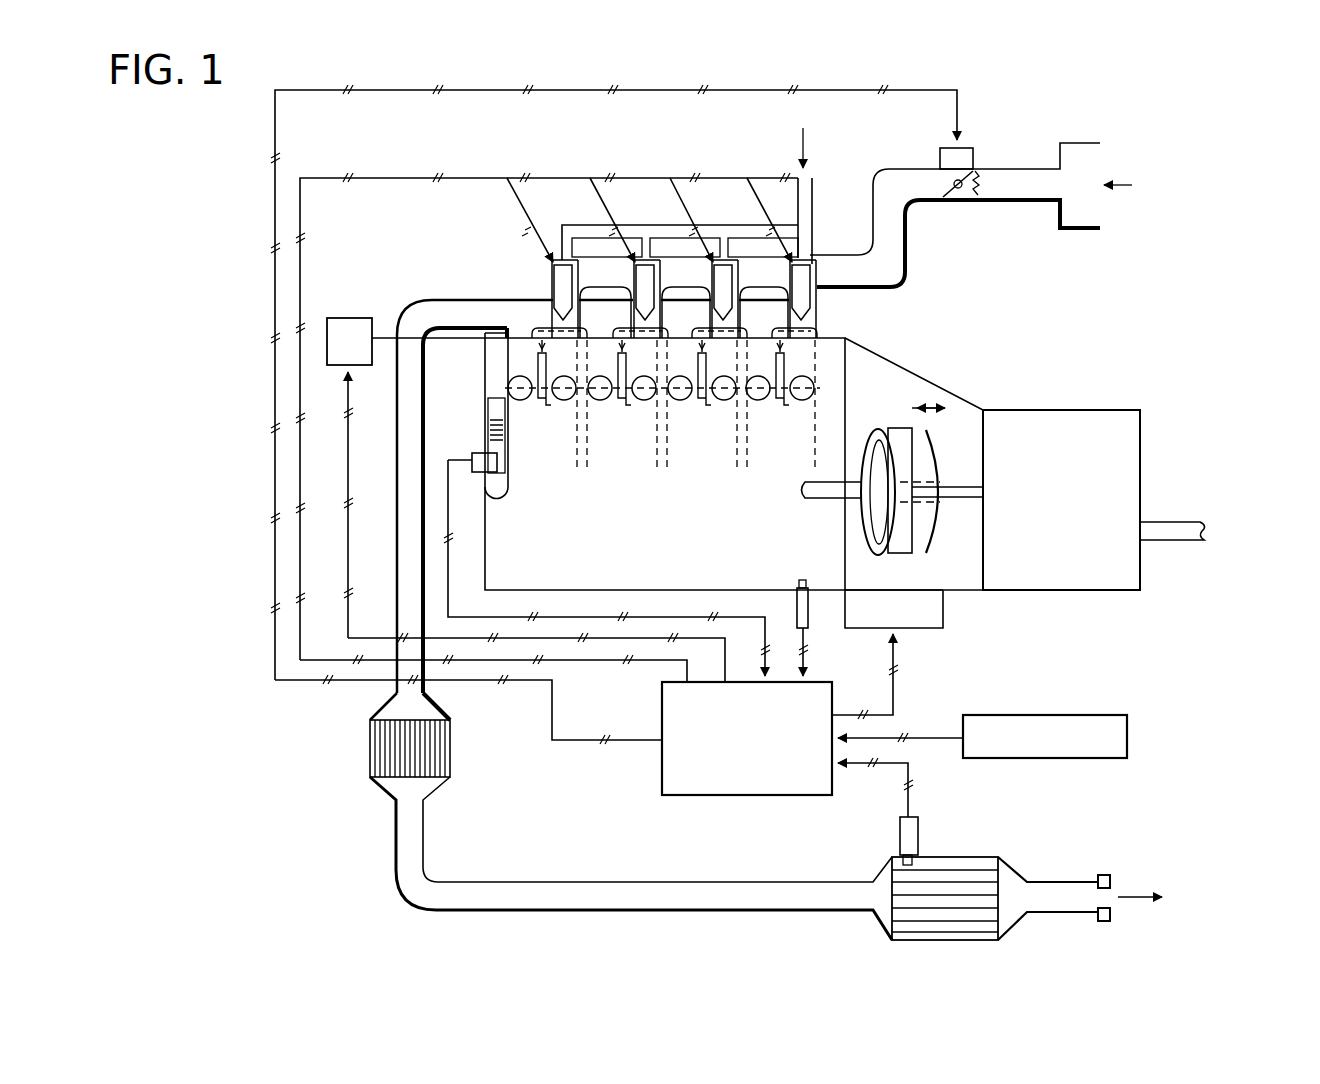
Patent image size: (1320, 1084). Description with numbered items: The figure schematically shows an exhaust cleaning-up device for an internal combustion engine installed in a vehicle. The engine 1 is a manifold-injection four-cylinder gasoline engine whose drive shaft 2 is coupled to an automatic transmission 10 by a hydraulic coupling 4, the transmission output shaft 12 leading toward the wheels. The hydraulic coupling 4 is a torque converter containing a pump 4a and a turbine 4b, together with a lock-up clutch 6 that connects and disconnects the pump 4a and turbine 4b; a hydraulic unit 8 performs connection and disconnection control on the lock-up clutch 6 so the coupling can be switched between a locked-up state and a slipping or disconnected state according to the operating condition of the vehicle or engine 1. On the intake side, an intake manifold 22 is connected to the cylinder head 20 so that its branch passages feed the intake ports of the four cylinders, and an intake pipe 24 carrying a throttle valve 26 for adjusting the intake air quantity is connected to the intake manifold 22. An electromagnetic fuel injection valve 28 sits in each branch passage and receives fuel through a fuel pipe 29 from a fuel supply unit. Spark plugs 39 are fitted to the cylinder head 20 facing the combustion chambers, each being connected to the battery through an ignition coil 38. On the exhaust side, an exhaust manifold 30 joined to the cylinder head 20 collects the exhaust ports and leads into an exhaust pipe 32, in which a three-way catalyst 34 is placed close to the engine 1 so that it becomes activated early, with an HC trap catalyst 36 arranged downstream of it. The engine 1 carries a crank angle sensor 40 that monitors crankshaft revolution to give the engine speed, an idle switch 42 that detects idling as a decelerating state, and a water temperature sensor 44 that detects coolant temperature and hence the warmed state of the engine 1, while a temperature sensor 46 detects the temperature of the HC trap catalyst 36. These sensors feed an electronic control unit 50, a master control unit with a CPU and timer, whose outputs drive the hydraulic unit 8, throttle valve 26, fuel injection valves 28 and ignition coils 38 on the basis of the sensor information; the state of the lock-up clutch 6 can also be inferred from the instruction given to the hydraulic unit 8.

The engine 1 is at (400, 258).
The drive shaft 2 is at (822, 500).
The hydraulic coupling 4 is at (945, 384).
The pump 4a is at (896, 430).
The turbine 4b is at (880, 440).
The lock-up clutch 6 is at (940, 435).
The hydraulic unit 8 is at (935, 608).
The automatic transmission 10 is at (1103, 410).
The output shaft 12 is at (1177, 525).
The cylinder head 20 is at (495, 372).
The intake manifold 22 is at (673, 270).
The intake pipe 24 is at (915, 176).
The throttle valve 26 is at (972, 150).
The fuel injection valve 28 is at (643, 277).
The fuel pipe 29 is at (815, 194).
The exhaust manifold 30 is at (466, 300).
The exhaust pipe 32 is at (400, 472).
The three-way catalyst 34 is at (370, 740).
The HC trap catalyst 36 is at (985, 857).
The ignition coil 38 is at (346, 318).
The spark plug 39 is at (785, 405).
The crank angle sensor 40 is at (812, 618).
The idle switch 42 is at (1127, 722).
The water temperature sensor 44 is at (478, 453).
The temperature sensor 46 is at (915, 815).
The electronic control unit 50 is at (805, 795).